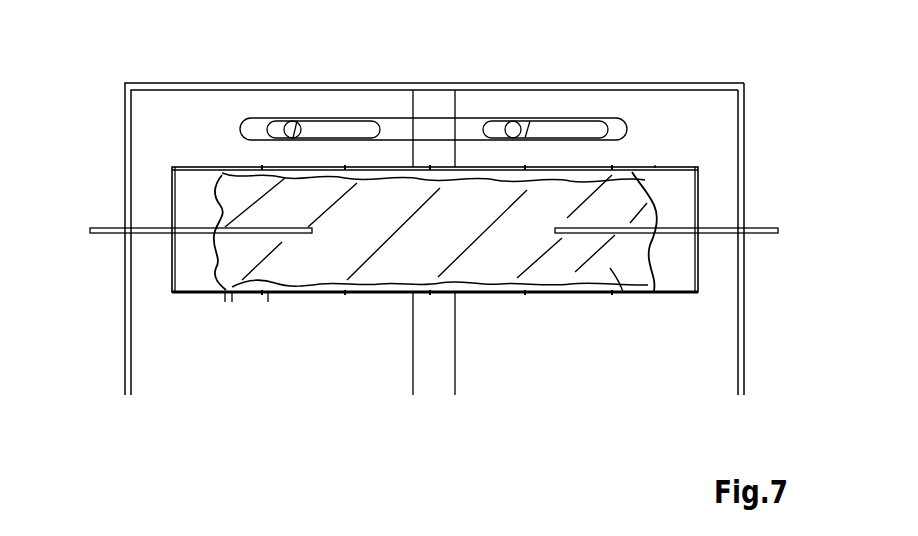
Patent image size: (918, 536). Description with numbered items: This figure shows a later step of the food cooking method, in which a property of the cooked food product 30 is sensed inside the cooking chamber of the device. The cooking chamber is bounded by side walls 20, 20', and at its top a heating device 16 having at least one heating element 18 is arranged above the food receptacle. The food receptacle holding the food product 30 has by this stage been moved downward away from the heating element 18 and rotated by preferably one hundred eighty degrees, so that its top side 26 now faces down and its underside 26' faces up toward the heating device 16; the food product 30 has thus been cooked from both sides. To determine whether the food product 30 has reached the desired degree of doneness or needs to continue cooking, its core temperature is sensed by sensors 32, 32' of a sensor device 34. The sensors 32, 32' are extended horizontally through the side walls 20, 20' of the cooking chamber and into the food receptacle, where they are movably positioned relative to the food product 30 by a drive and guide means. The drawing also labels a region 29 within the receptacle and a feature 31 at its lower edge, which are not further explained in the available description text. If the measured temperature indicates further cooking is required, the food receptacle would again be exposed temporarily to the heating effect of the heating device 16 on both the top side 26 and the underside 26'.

The heating device 16 is at (294, 105).
The heating element 18 is at (608, 128).
The side wall 20 is at (390, 275).
The side wall 20' is at (791, 239).
The top side 26 is at (144, 343).
The underside 26' is at (761, 134).
The filter material 29 is at (690, 198).
The food product 30 is at (623, 290).
The fastening point 31 is at (268, 293).
The sensor 32 is at (173, 263).
The sensor 32' is at (707, 253).
The sensor device 34 is at (147, 198).